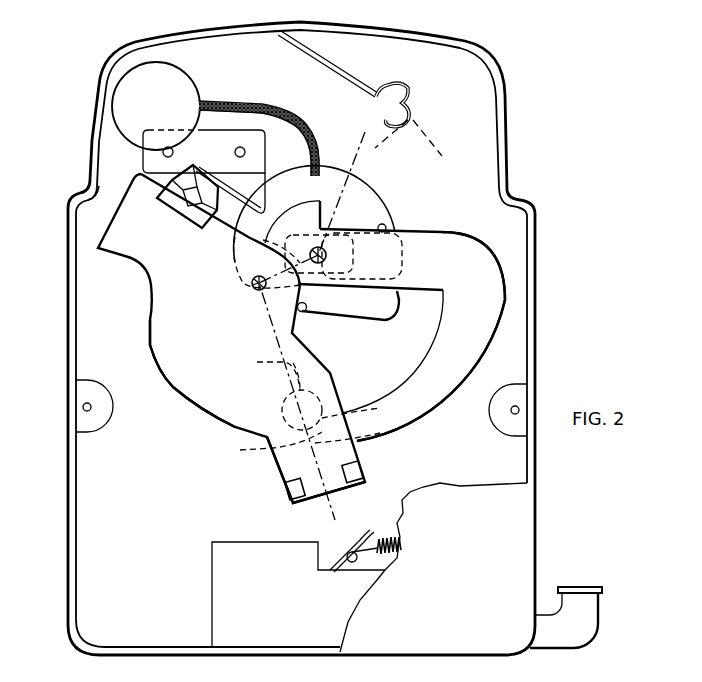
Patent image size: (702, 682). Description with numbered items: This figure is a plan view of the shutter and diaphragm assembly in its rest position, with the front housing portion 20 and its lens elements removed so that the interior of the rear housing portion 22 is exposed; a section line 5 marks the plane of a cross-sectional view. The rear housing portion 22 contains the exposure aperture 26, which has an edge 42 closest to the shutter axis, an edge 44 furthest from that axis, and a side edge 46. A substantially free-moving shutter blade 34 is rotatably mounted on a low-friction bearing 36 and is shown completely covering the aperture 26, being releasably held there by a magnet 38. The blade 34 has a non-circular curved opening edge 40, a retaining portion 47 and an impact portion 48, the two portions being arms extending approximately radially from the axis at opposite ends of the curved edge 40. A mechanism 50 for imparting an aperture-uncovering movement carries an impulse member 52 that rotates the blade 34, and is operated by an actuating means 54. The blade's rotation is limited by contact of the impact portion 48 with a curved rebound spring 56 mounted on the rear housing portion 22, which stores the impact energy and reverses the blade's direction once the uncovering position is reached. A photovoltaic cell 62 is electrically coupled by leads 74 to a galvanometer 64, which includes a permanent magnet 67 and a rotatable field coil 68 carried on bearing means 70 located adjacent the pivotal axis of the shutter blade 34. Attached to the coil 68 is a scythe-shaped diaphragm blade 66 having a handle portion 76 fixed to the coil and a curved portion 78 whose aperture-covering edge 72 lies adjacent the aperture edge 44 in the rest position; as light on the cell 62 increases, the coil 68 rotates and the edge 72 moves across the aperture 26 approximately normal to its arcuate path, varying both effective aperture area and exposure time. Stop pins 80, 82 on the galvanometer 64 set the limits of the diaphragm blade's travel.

The section line 5- 5 is at (333, 135).
The front housing portion 20 is at (537, 517).
The rear housing portion 22 is at (537, 318).
The aperture 26 is at (294, 417).
The blade 34 is at (120, 262).
The bearing 36 is at (251, 281).
The magnet 38 is at (174, 184).
The curved opening edge 40 is at (150, 350).
The edge of aperture closest to axis 42 is at (282, 362).
The edge of aperture furthest from axis 44 is at (268, 449).
The side edge of aperture 46 is at (282, 402).
The retaining portion 47 is at (118, 206).
The impact portion 48 is at (287, 470).
The mechanism for imparting aperture-uncovering movement 50 is at (272, 607).
The impulse member 52 is at (400, 523).
The actuating means 54 is at (598, 616).
The rebound spring 56 is at (418, 88).
The photovoltaic cell 62 is at (161, 94).
The galvanometer 64 is at (366, 184).
The diaphragm blade 66 is at (503, 266).
The permanent magnet 67 is at (358, 250).
The field coil 68 is at (352, 285).
The bearing means 70 is at (328, 238).
The aperture-covering edge 72 is at (398, 362).
The leads 74 is at (247, 104).
The handle portion 76 is at (448, 233).
The curved portion 78 is at (430, 405).
The pin 80 is at (386, 226).
The pin 82 is at (306, 310).